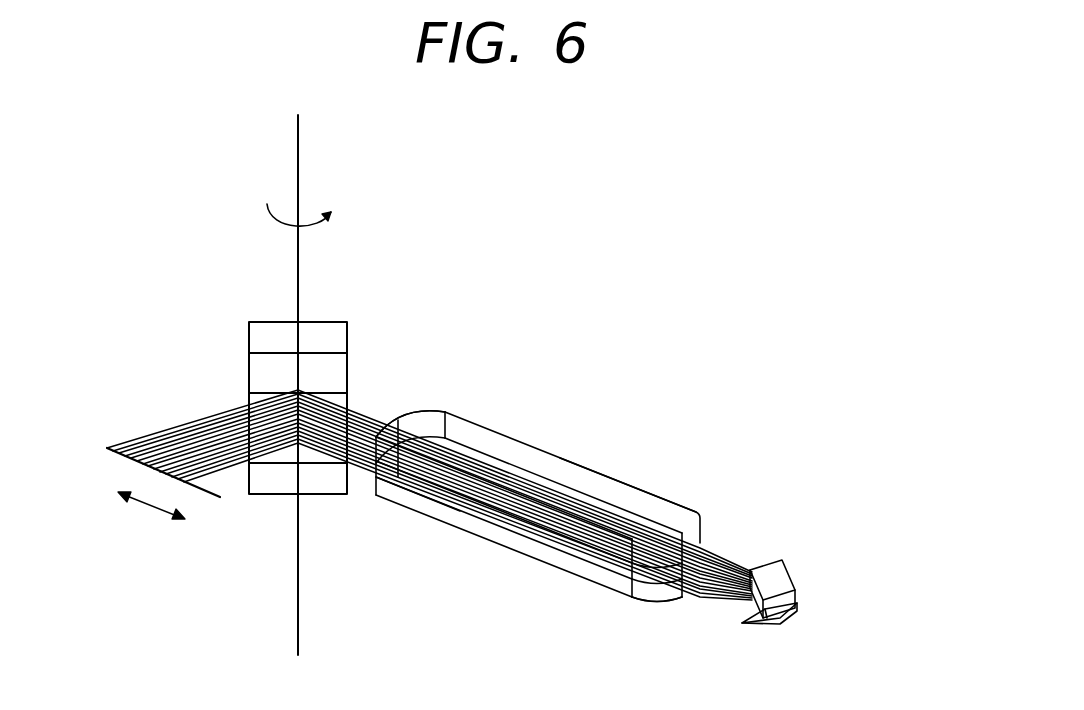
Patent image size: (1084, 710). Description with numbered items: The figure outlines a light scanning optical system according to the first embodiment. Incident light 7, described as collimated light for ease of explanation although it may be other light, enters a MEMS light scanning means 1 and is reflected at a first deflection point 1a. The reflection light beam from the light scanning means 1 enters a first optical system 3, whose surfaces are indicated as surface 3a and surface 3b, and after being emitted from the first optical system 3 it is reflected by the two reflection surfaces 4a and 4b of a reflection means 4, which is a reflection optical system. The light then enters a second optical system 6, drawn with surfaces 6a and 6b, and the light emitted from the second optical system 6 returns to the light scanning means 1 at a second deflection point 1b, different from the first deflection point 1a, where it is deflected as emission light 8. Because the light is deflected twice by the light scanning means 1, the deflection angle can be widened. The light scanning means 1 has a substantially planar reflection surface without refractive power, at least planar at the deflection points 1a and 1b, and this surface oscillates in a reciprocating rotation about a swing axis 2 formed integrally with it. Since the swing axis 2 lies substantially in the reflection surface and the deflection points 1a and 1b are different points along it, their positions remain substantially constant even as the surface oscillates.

The MEMS light scanning means 1 is at (342, 307).
The first deflection point 1a is at (308, 390).
The second deflection point 1b is at (306, 426).
The swing axis 2 is at (298, 172).
The first optical system 3 is at (743, 468).
The first lens entrance surface 3a is at (432, 412).
The first lens exit surface 3b is at (648, 492).
The reflection means 4 is at (819, 591).
The reflection surface 4a is at (782, 578).
The reflection surface 4b is at (800, 630).
The second optical system 6 is at (662, 687).
The second lens exit surface 6a is at (667, 602).
The second lens entrance surface 6b is at (404, 500).
The incident light 7 is at (223, 413).
The emission light 8 is at (203, 462).